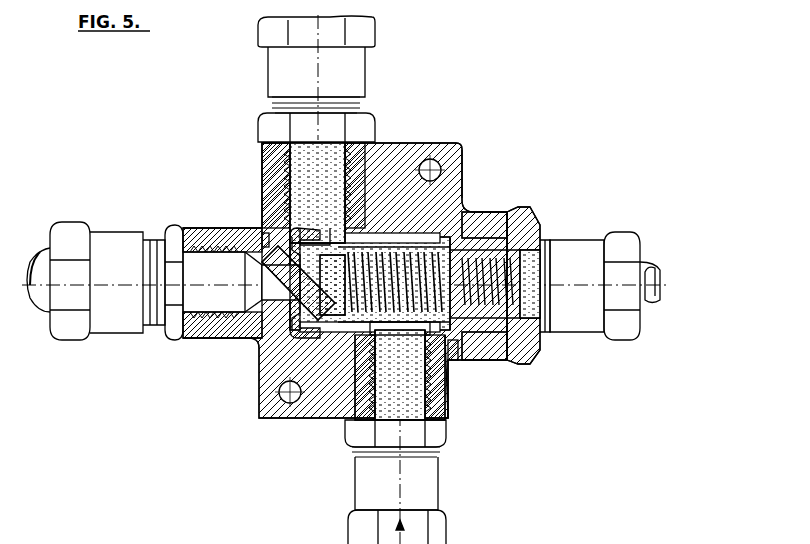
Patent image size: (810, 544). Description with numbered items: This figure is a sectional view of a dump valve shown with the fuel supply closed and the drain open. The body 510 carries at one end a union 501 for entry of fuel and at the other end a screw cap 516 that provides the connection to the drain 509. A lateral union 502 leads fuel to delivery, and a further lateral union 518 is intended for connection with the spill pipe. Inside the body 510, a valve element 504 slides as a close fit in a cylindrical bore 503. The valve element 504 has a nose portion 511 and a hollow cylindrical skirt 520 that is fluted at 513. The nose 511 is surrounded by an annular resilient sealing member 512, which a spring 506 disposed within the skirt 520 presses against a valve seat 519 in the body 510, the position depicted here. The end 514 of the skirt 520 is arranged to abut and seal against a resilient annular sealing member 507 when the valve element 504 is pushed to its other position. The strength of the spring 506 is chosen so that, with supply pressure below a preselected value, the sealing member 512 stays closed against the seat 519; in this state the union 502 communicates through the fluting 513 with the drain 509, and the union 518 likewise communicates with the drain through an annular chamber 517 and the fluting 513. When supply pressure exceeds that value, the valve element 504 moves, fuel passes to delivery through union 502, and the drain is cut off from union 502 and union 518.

The union 501 is at (186, 230).
The lateral union 502 is at (278, 178).
The cylindrical bore 503 is at (356, 336).
The valve element 504 is at (322, 340).
The spring 506 is at (460, 376).
The resilient annular sealing member 507 is at (538, 242).
The drain 509 is at (565, 255).
The body 510 is at (397, 147).
The nose portion 511 is at (228, 342).
The annular resilient sealing member 512 is at (275, 322).
The fluting 513 is at (465, 214).
The end of the skirt 514 is at (463, 367).
The screw cap 516 is at (456, 358).
The annular chamber 517 is at (462, 168).
The lateral union 518 is at (458, 428).
The valve seat 519 is at (264, 236).
The hollow cylindrical skirt 520 is at (520, 215).